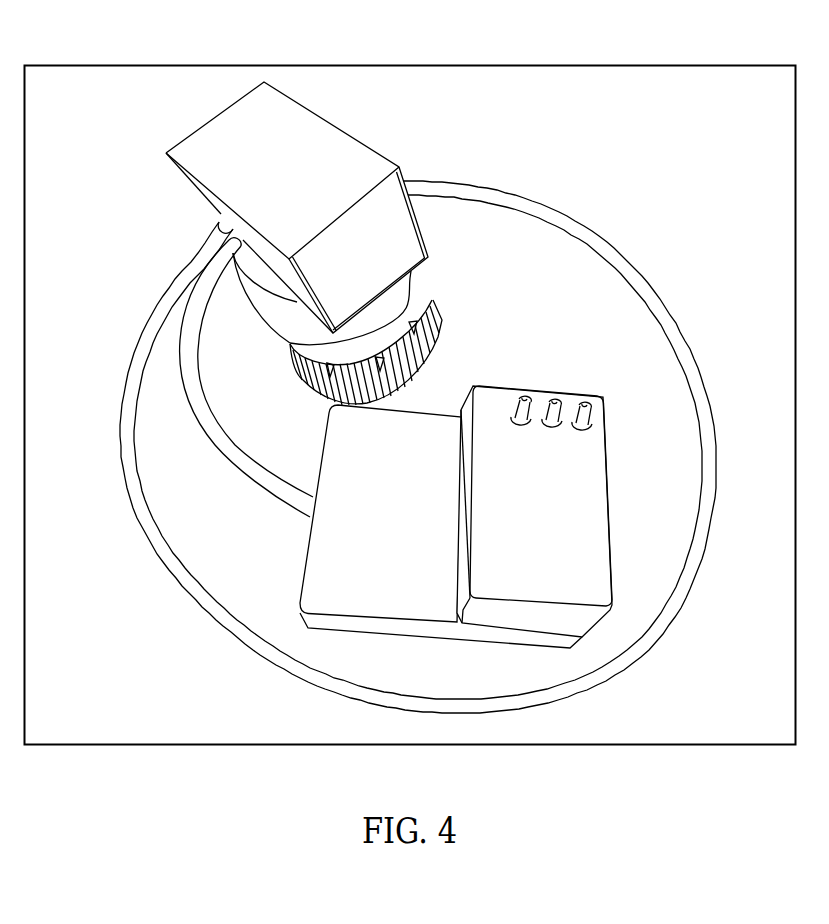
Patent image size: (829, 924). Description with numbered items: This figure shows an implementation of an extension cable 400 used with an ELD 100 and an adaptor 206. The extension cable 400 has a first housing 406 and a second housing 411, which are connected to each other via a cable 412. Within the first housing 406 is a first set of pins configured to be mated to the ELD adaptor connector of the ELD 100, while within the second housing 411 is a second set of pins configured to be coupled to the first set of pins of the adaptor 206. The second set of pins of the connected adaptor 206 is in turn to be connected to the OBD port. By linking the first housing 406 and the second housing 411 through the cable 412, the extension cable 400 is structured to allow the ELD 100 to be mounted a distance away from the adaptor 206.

The extension cable 400 is at (264, 207).
The second housing 411 is at (318, 138).
The cable 412 is at (662, 303).
The adaptor 206 is at (420, 303).
The first housing 406 is at (313, 545).
The ELD 100 is at (600, 503).